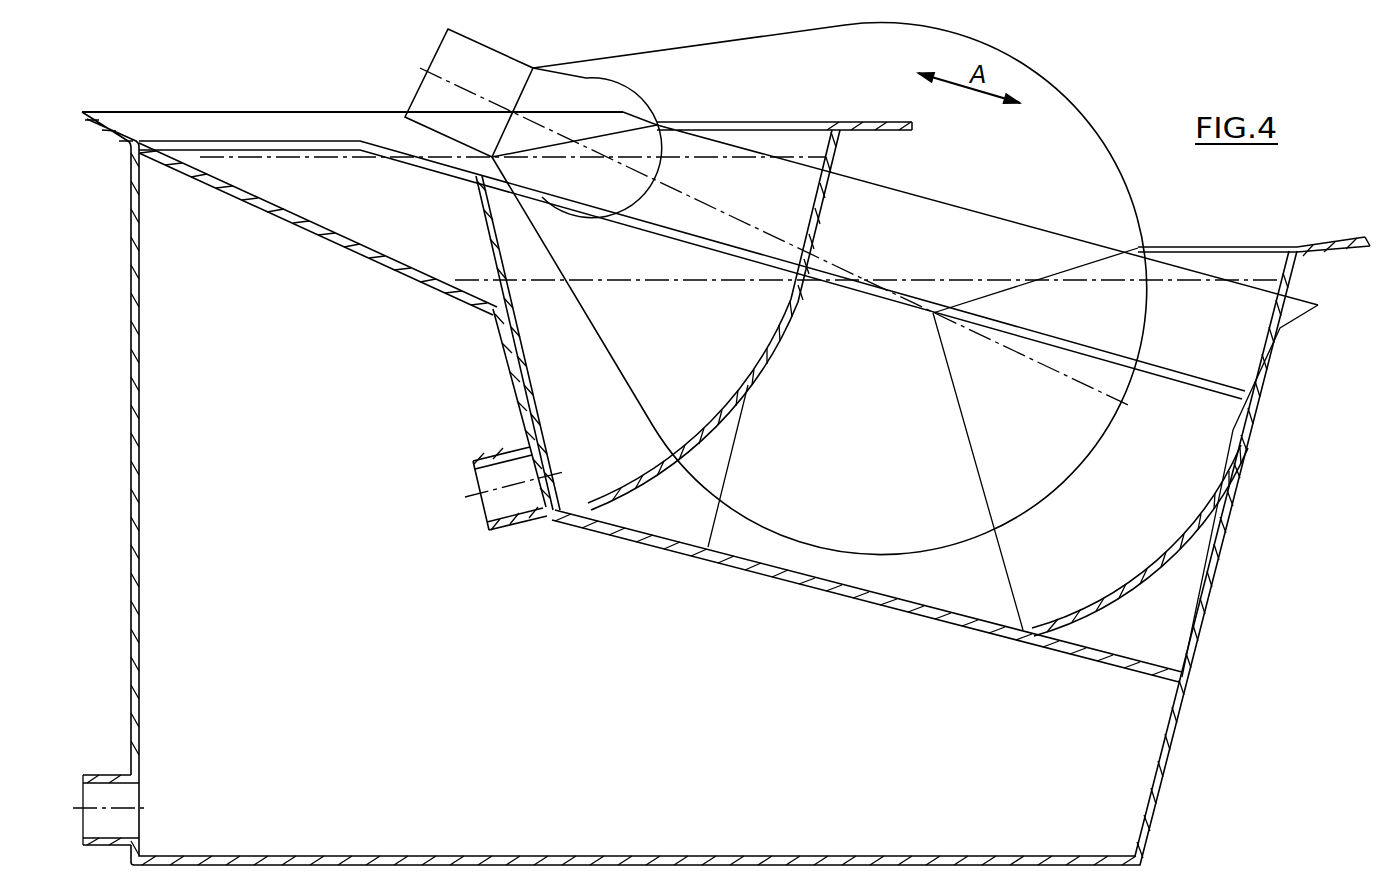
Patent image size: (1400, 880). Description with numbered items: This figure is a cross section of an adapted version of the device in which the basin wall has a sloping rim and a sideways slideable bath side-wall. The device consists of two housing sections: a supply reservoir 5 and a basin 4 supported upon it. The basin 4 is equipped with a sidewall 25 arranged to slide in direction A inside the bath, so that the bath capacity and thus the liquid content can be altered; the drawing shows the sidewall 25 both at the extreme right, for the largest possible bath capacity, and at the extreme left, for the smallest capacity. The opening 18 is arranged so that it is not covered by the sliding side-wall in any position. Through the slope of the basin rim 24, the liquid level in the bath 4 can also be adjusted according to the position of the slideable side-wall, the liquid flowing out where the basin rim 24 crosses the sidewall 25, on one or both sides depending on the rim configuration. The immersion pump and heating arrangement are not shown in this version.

The basin 4 is at (522, 394).
The supply reservoir 5 is at (1177, 736).
The opening 18 is at (541, 473).
The basin rim 24 is at (891, 299).
The sidewall 25 is at (700, 437).